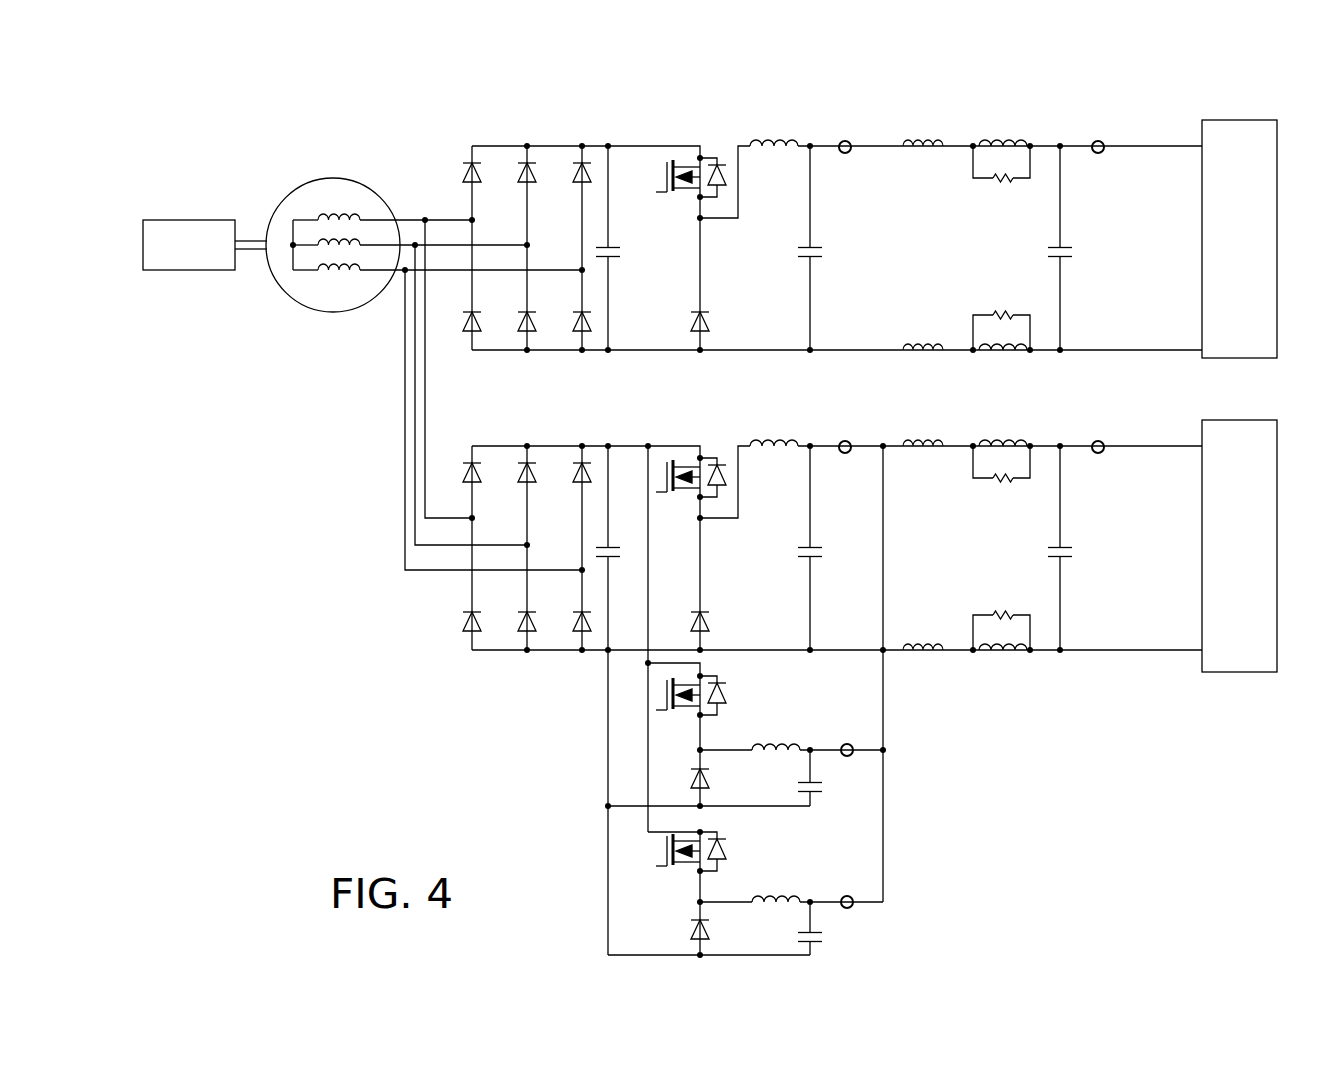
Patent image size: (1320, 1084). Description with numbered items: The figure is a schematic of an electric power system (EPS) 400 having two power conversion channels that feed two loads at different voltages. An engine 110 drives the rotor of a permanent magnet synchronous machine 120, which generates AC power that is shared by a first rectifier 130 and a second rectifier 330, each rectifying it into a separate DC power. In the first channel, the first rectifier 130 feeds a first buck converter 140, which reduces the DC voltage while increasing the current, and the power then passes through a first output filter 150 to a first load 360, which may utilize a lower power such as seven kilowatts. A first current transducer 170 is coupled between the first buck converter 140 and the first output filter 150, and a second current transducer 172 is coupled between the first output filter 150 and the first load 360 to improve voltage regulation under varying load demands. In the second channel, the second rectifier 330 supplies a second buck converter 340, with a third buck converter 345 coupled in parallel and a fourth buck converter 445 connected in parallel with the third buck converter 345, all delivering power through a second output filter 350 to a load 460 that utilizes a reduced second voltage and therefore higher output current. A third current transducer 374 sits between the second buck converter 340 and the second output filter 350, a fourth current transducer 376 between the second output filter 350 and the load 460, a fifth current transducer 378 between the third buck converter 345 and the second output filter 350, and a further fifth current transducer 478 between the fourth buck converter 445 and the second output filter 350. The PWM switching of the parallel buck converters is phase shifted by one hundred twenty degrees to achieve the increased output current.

The electric power system (EPS) 400 is at (172, 88).
The engine 110 is at (172, 220).
The permanent magnet synchronous machine (PMSM) 120 is at (277, 185).
The first rectifier 130 is at (640, 107).
The first buck converter 140 is at (823, 107).
The first output filter 150 is at (1080, 107).
The first current transducer 170 is at (849, 166).
The second current transducer 172 is at (1110, 168).
The first load 360 is at (1297, 107).
The second rectifier 330 is at (640, 417).
The second buck converter 340 is at (823, 417).
The second output filter 350 is at (1080, 417).
The third current transducer 374 is at (847, 502).
The fourth current transducer 376 is at (1105, 503).
The load 460 is at (1290, 417).
The third buck converter 345 is at (595, 660).
The fifth current transducer 378 is at (851, 775).
The fourth buck converter 445 is at (595, 812).
The fifth current transducer 478 is at (868, 920).